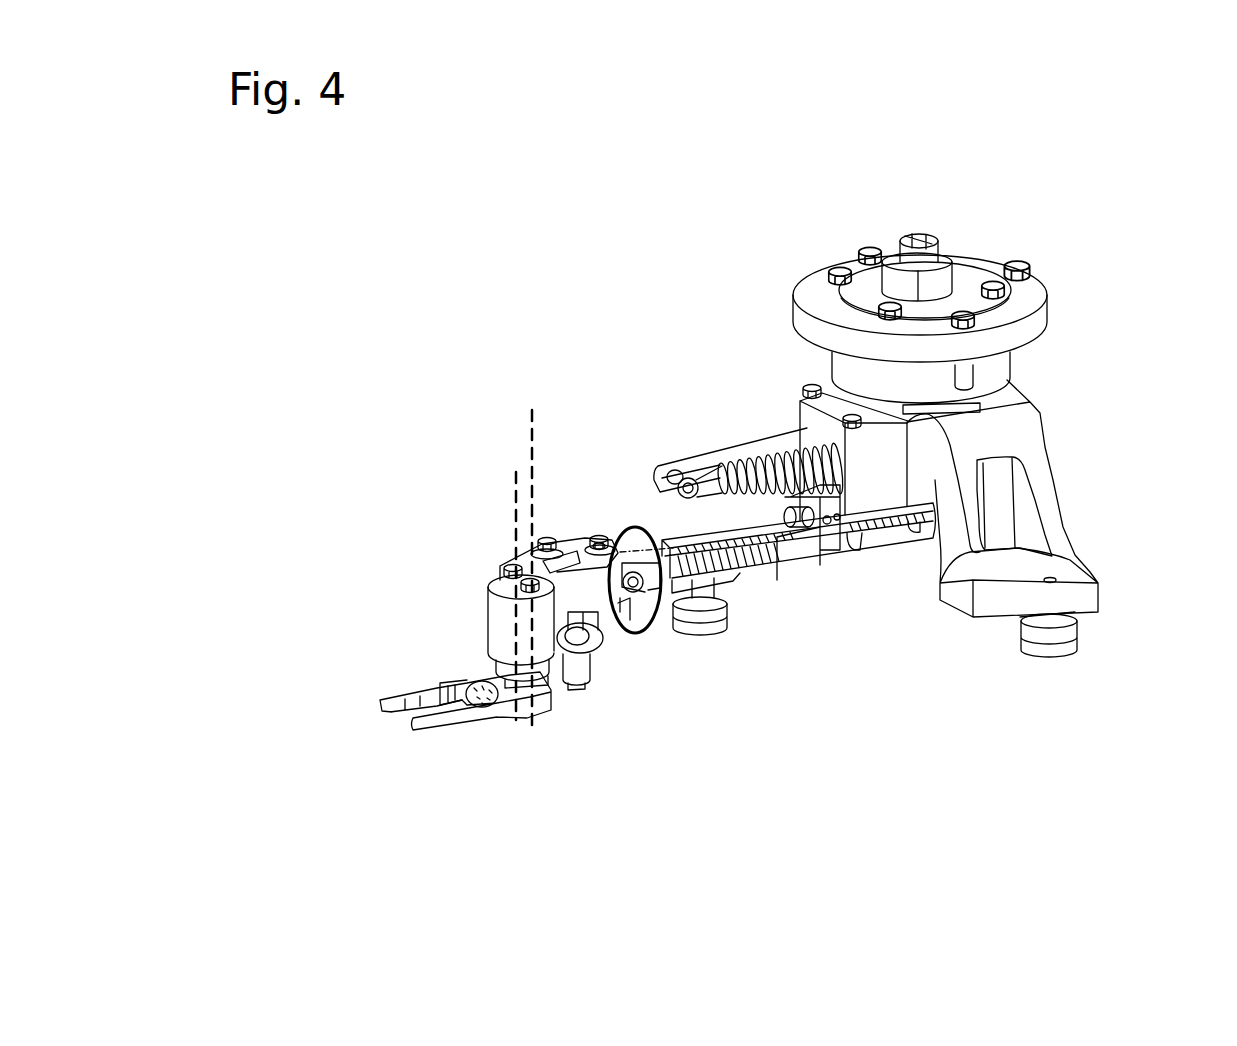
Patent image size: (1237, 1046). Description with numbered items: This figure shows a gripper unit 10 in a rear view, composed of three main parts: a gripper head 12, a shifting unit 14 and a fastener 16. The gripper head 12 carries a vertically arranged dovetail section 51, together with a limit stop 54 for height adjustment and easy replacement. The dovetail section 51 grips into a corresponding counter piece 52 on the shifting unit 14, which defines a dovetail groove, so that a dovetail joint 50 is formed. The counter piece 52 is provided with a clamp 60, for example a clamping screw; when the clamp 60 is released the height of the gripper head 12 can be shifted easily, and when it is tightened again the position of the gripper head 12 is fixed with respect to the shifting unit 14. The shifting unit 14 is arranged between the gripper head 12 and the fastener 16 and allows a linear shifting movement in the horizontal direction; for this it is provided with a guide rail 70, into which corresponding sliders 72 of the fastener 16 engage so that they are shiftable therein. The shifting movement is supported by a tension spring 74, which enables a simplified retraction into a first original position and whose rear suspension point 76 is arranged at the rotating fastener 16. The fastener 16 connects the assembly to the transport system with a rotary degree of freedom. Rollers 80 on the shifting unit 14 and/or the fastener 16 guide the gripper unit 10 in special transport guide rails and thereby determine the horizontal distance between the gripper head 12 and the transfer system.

The gripper unit 10 is at (600, 180).
The gripper head 12 is at (650, 743).
The shifting unit 14 is at (1003, 800).
The fastener 16 is at (1097, 740).
The dovetail joint 50 is at (655, 628).
The dovetail section 51 is at (624, 642).
The counter piece 52 is at (653, 423).
The limit stop 54 is at (627, 462).
The clamp 60 is at (632, 572).
The guide rail 70 is at (773, 565).
The sliders 72 is at (887, 537).
The tension spring 74 is at (771, 443).
The rear suspension point 76 is at (683, 354).
The rollers 80 is at (718, 626).